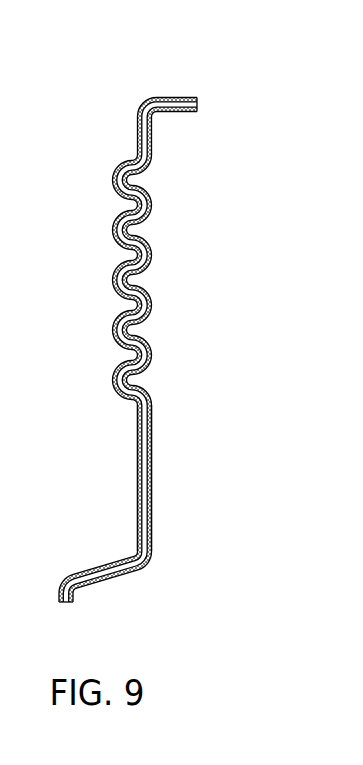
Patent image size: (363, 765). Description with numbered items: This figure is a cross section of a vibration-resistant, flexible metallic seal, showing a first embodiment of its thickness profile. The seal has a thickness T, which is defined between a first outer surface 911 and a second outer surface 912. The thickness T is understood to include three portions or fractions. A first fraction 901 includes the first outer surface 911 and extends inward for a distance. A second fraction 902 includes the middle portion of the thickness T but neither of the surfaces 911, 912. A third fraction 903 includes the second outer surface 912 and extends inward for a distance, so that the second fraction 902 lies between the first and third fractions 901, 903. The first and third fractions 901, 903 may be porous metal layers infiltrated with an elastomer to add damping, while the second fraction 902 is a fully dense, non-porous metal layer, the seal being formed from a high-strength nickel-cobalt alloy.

The first fraction 901 is at (198, 99).
The second fraction 902 is at (198, 104).
The third fraction 903 is at (198, 110).
The first outer surface 911 is at (137, 433).
The second outer surface 912 is at (153, 433).
The thickness T is at (87, 480).